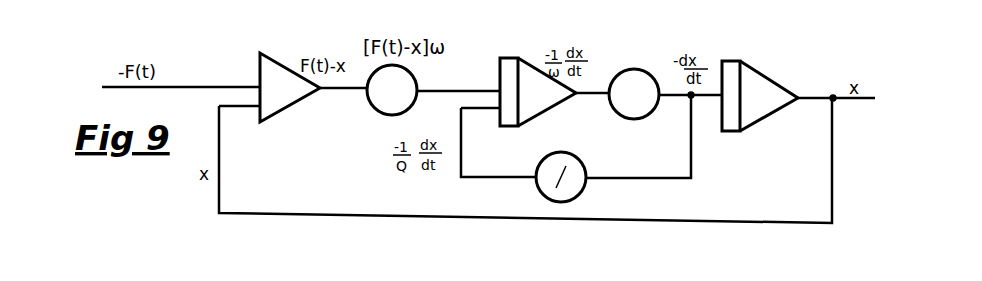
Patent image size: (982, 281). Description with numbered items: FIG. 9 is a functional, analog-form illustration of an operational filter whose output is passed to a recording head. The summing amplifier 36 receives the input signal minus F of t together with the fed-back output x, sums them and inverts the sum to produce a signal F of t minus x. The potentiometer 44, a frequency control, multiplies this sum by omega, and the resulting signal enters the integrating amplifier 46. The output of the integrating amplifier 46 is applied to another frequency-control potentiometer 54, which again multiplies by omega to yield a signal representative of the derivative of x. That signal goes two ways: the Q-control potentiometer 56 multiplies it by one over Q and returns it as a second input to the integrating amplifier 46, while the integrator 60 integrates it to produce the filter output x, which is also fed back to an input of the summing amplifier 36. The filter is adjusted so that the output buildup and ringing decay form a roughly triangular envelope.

The summing amplifier 36 is at (279, 63).
The potentiometer 44 is at (418, 80).
The integrating amplifier 46 is at (521, 60).
The potentiometer 54 is at (634, 69).
The potentiometer 56 is at (587, 158).
The integrator 60 is at (757, 70).